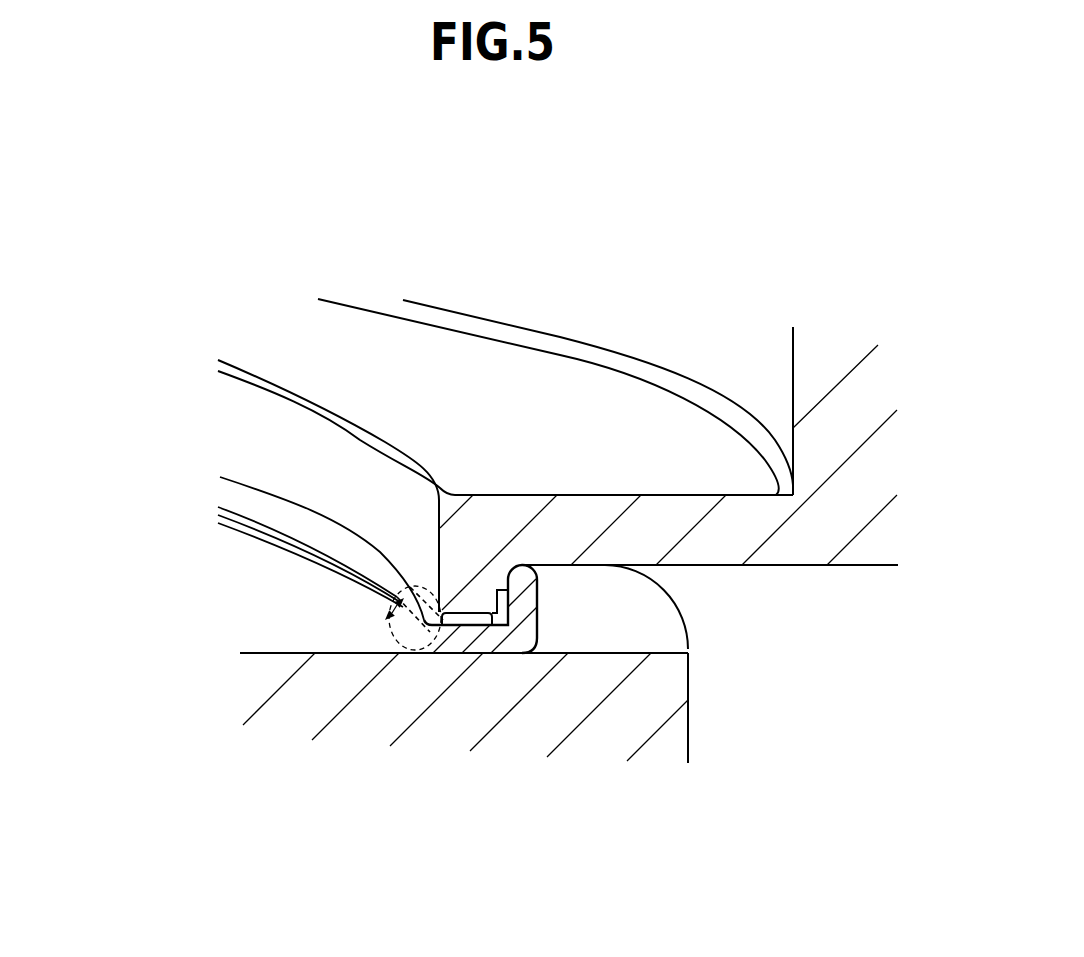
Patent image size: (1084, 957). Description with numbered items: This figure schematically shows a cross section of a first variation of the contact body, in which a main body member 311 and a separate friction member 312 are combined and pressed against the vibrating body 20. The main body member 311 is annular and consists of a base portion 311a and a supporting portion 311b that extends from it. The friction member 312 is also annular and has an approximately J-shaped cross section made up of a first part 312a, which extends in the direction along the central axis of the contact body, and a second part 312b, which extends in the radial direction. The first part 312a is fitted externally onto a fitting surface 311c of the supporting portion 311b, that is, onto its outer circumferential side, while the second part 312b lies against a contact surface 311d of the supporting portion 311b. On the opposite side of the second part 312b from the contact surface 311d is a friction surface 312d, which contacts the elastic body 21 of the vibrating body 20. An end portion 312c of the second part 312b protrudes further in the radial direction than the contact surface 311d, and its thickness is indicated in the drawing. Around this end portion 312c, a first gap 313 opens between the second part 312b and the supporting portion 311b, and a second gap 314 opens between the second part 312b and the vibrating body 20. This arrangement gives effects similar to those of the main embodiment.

The main body member 311 is at (763, 130).
The base portion 311a is at (828, 410).
The supporting portion 311b is at (722, 520).
The fitting surface 311c is at (468, 608).
The contact surface 311d is at (443, 603).
The friction member 312 is at (817, 708).
The first part 312a is at (545, 590).
The second part 312b is at (417, 678).
The end portion 312c is at (392, 622).
The friction surface 312d is at (432, 658).
The first gap 313 is at (430, 592).
The second gap 314 is at (397, 648).
The elastic body 21 is at (464, 730).
The vibrating body 20 is at (464, 709).